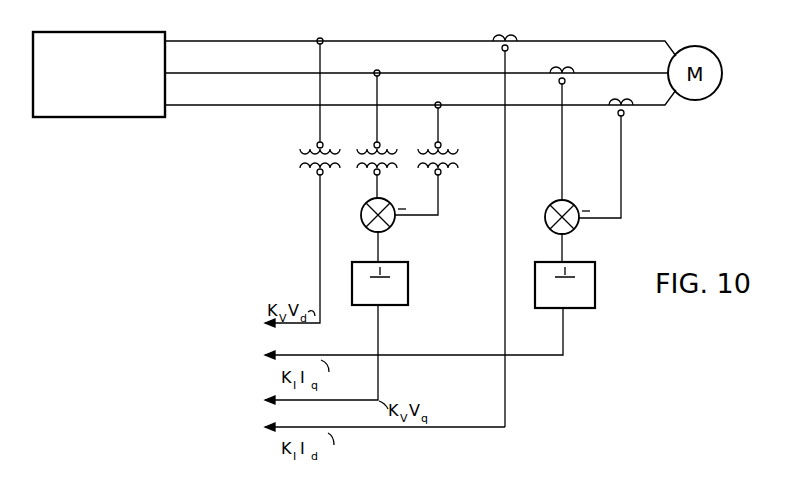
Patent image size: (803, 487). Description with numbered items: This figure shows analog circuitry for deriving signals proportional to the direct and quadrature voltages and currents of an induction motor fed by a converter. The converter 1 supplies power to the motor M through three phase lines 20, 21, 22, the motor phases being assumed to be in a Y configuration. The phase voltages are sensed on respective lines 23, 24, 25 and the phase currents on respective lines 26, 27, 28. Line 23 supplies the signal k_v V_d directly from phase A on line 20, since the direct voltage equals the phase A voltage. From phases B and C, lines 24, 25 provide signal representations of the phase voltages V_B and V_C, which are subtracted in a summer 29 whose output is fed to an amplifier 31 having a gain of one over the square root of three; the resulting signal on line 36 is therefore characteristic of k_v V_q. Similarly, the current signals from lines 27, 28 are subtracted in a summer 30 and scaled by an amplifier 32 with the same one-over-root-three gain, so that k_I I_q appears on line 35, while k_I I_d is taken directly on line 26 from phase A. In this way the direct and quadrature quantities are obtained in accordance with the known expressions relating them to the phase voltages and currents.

The converter 1 is at (157, 32).
The phase line 20 is at (421, 43).
The phase line 21 is at (432, 74).
The third phase output line 22 is at (445, 105).
The line 23 is at (318, 122).
The line 24 is at (376, 122).
The line 25 is at (436, 122).
The line 26 is at (500, 124).
The line 27 is at (560, 124).
The line 28 is at (619, 124).
The summing junction 29 is at (376, 238).
The summing junction 30 is at (565, 246).
The divider (1/sqrt3) circuit 31 is at (409, 273).
The divider (1/sqrt3) circuit 32 is at (597, 280).
The line 35 is at (565, 322).
The line 36 is at (380, 322).